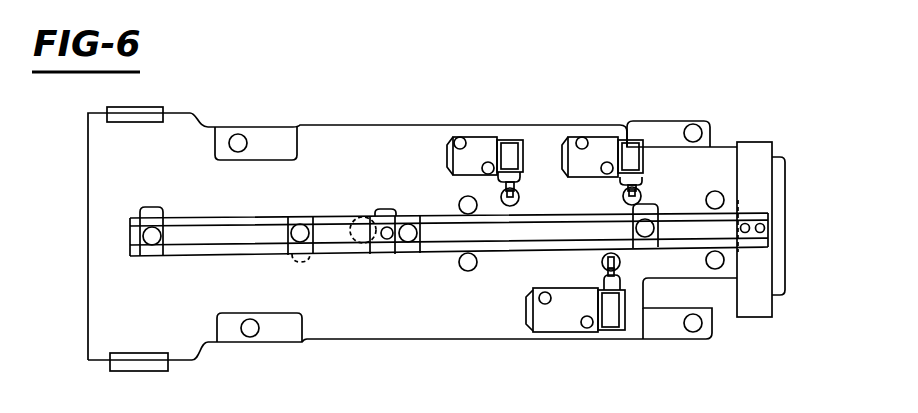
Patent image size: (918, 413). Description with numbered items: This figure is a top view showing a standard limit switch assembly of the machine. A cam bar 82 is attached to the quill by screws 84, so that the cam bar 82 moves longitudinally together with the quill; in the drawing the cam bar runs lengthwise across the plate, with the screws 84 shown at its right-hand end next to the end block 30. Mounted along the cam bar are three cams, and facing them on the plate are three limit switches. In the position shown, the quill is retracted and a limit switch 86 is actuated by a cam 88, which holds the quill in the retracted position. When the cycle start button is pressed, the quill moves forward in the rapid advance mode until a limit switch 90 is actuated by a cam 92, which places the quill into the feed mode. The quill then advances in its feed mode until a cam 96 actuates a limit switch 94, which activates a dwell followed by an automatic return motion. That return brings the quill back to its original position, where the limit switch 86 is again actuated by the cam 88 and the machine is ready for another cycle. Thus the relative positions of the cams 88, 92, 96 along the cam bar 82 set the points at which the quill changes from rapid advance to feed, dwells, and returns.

The end block 30 is at (778, 267).
The cam bar 82 is at (722, 227).
The screws 84 is at (763, 225).
The limit switch 86 is at (595, 135).
The cam 88 is at (653, 206).
The limit switch 90 is at (573, 317).
The cam 92 is at (312, 258).
The limit switch 94 is at (480, 143).
The cam 96 is at (157, 205).